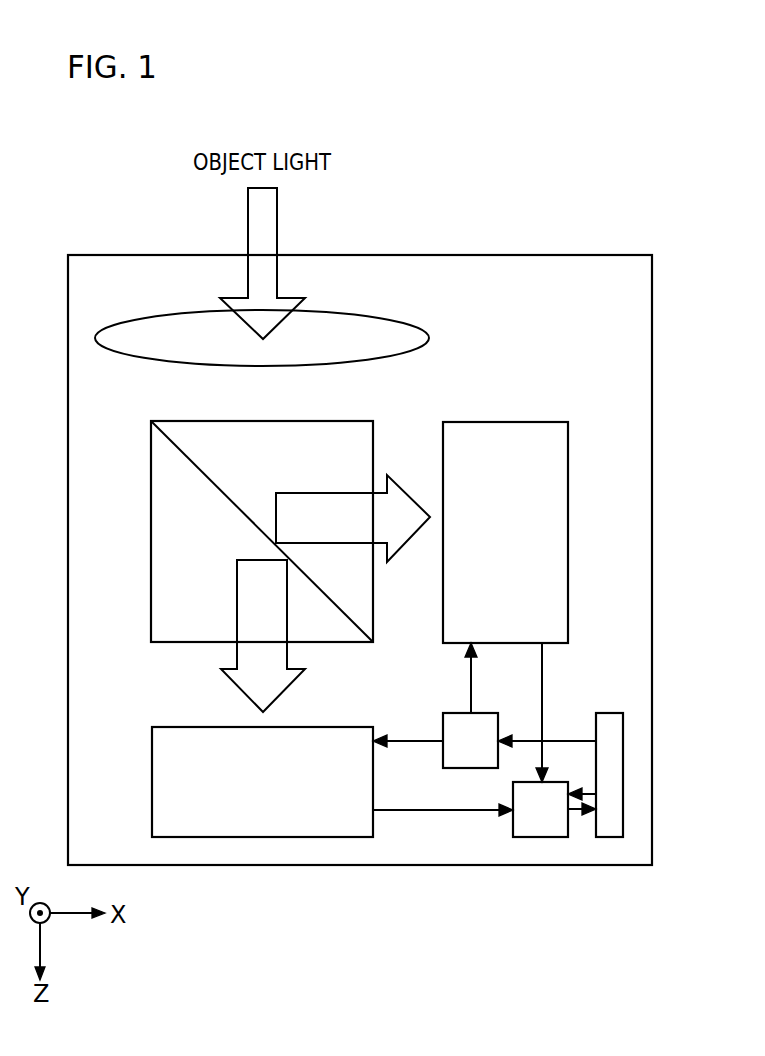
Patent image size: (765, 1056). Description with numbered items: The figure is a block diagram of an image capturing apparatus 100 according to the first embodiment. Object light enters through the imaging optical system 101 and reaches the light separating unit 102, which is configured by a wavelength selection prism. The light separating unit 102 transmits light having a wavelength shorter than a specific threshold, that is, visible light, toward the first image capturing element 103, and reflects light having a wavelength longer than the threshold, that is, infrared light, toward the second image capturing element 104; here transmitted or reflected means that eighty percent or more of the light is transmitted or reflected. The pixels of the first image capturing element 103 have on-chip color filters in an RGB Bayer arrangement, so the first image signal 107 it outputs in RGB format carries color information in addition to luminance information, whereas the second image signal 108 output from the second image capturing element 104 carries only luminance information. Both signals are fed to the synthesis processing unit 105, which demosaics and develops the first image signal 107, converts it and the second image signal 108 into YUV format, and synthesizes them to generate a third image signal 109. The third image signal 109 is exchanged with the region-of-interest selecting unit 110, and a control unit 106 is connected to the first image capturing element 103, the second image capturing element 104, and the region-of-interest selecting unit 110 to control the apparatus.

The image capturing apparatus 100 is at (409, 230).
The imaging optical system 101 is at (149, 327).
The light separating unit 102 is at (173, 535).
The first image capturing element 103 is at (263, 823).
The second image capturing element 104 is at (555, 520).
The synthesis processing unit 105 is at (540, 823).
The control unit 106 is at (457, 730).
The first image signal 107 is at (425, 812).
The second image signal 108 is at (542, 689).
The third image signal 109 is at (577, 817).
The region-of-interest selecting unit 110 is at (610, 823).